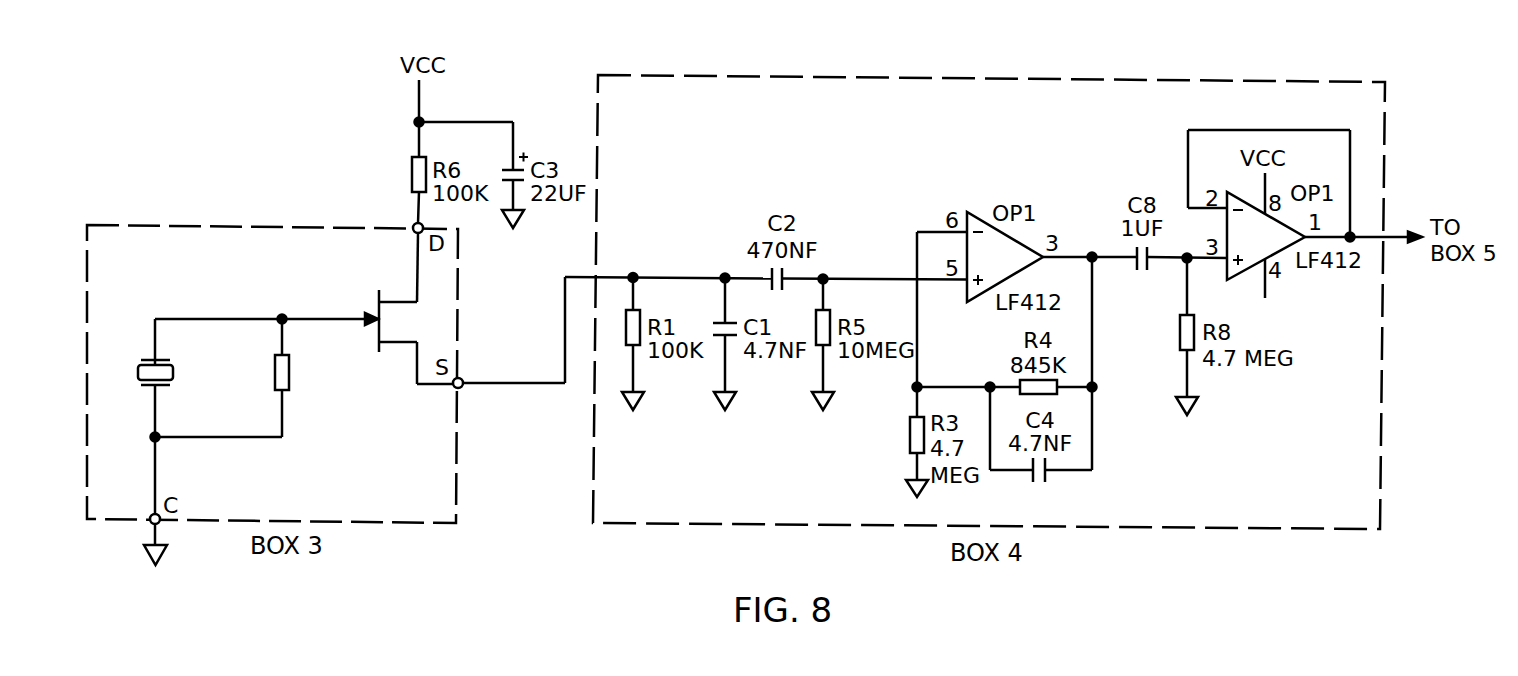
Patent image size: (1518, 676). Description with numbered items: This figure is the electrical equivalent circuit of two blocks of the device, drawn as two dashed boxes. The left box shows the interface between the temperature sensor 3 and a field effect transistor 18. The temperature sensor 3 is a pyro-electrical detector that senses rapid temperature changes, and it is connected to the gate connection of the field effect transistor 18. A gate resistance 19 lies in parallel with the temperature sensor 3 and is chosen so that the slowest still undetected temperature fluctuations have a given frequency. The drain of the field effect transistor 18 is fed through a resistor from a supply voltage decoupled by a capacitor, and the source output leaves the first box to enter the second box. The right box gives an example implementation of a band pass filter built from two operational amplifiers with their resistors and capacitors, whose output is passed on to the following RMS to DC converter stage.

The temperature sensor 3 is at (138, 366).
The gate resistance 19 is at (275, 371).
The field effect transistor 18 is at (377, 332).